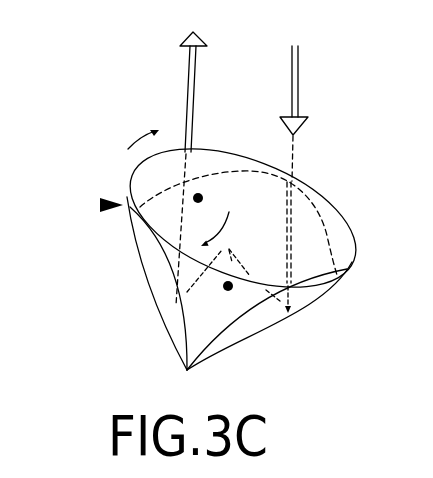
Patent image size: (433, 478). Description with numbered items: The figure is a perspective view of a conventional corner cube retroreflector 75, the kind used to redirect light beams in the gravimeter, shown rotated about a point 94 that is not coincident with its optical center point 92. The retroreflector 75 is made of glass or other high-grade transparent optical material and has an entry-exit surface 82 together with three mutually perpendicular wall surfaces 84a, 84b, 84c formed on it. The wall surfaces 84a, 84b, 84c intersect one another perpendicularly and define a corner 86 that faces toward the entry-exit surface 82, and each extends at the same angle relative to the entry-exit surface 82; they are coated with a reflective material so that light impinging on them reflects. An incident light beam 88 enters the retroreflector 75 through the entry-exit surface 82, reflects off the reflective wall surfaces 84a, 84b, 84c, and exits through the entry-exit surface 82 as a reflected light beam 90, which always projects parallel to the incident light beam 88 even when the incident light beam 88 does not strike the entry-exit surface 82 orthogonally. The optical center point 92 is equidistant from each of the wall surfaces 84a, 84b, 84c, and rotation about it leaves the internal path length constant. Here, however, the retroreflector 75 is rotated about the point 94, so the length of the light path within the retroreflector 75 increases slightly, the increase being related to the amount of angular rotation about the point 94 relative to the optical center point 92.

The retroreflector 75 is at (101, 205).
The entry-exit surface 82 is at (346, 239).
The wall surface 84a is at (158, 275).
The wall surface 84b is at (283, 313).
The wall surface 84c is at (248, 157).
The corner 86 is at (190, 369).
The incident light beam 88 is at (300, 69).
The reflected light beam 90 is at (188, 69).
The optical center point 92 is at (227, 287).
The point 94 is at (197, 196).